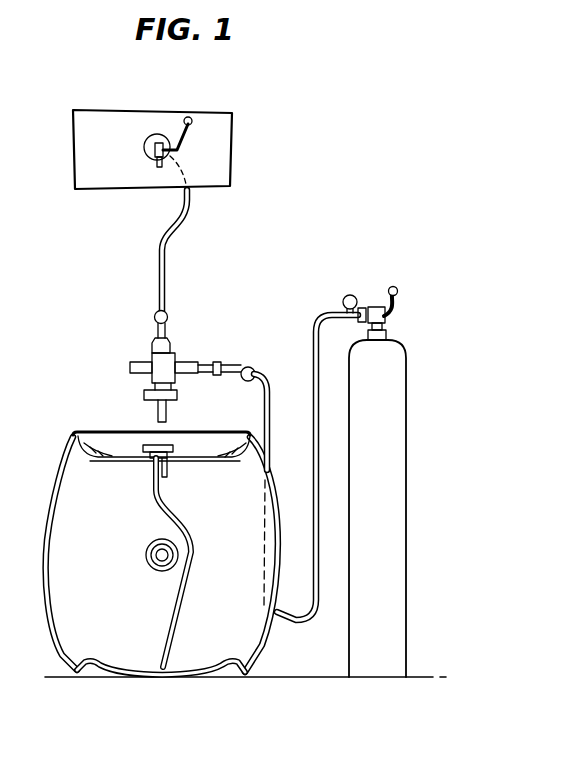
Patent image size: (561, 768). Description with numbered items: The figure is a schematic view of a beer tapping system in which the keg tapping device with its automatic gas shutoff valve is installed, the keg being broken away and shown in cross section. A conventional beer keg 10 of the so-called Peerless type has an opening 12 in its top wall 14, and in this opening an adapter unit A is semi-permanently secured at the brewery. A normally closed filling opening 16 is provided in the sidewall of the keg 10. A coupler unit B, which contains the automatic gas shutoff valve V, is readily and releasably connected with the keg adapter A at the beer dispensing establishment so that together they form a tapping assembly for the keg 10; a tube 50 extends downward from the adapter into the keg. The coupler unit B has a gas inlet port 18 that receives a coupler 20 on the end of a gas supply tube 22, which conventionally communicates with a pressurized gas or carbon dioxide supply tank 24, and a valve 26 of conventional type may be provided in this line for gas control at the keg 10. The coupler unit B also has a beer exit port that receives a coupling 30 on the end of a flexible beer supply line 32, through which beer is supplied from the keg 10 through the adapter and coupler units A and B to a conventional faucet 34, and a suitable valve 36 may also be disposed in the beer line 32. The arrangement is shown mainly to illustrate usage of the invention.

The beer keg 10 is at (52, 492).
The opening 12 is at (160, 445).
The top wall 14 is at (115, 452).
The filling opening 16 is at (157, 574).
The gas inlet port 18 is at (208, 363).
The coupler 20 is at (217, 376).
The gas supply tube 22 is at (313, 380).
The gas supply tank 24 is at (365, 668).
The valve 26 is at (251, 367).
The coupling 30 is at (148, 345).
The beer supply line 32 is at (159, 262).
The faucet 34 is at (156, 134).
The valve 36 is at (167, 314).
The spear tube 50 is at (189, 606).
The adapter unit A is at (176, 483).
The coupler unit B is at (130, 363).
The automatic gas shutoff valve V is at (170, 366).